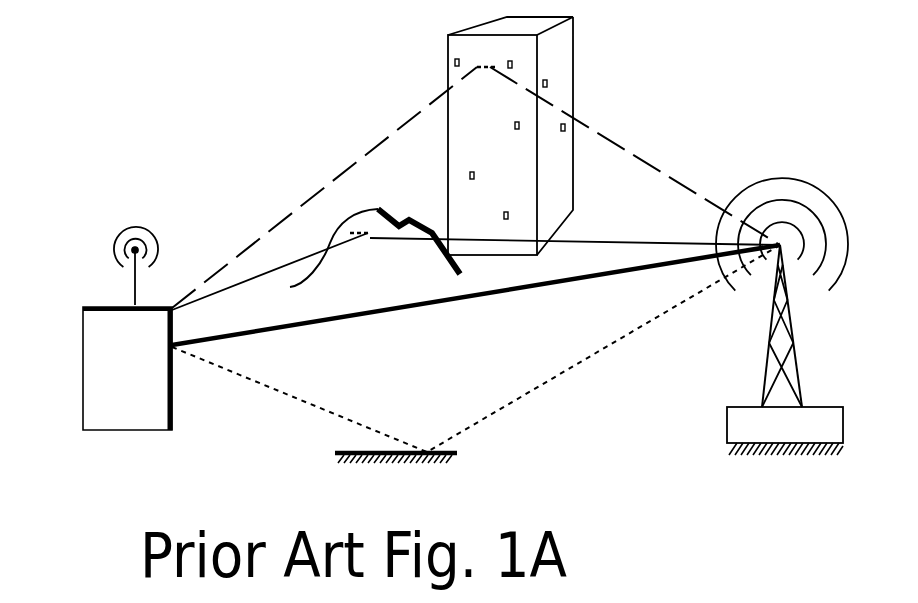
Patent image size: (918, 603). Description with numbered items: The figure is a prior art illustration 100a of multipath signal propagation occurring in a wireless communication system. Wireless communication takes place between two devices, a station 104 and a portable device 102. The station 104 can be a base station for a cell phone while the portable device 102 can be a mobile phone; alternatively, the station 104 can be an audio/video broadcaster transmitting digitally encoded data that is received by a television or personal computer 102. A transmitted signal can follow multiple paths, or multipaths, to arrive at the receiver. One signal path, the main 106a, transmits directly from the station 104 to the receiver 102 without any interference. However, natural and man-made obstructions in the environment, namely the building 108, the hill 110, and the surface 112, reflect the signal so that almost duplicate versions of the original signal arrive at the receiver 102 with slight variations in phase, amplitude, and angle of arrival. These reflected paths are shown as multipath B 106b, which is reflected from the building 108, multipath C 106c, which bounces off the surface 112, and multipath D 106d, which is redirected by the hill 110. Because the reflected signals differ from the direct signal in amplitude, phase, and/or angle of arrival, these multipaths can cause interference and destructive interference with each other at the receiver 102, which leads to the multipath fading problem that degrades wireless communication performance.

The multipath signal propagation illustration 100a is at (849, 110).
The portable device 102 is at (116, 306).
The station 104 is at (761, 380).
The main 106a is at (350, 318).
The multipath B 106b is at (592, 117).
The multipath C 106c is at (467, 425).
The multipath D 106d is at (303, 258).
The building 108 is at (487, 138).
The hill 110 is at (380, 268).
The surface 112 is at (372, 465).